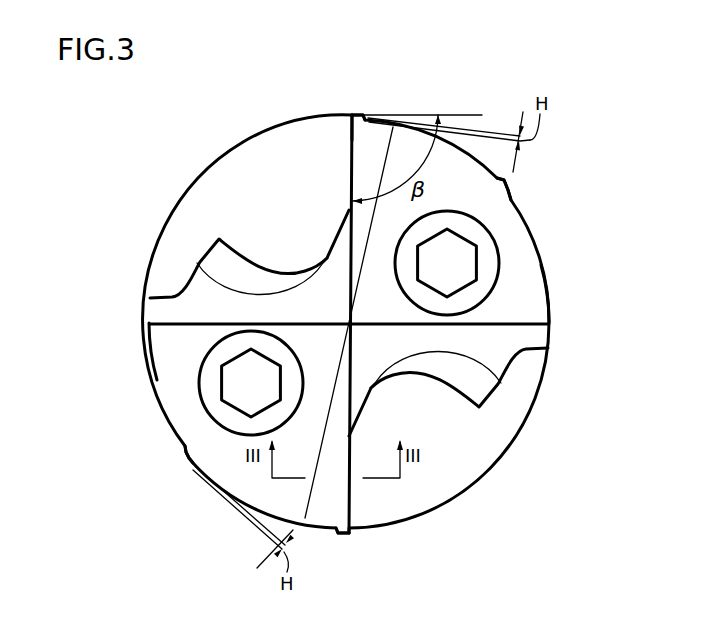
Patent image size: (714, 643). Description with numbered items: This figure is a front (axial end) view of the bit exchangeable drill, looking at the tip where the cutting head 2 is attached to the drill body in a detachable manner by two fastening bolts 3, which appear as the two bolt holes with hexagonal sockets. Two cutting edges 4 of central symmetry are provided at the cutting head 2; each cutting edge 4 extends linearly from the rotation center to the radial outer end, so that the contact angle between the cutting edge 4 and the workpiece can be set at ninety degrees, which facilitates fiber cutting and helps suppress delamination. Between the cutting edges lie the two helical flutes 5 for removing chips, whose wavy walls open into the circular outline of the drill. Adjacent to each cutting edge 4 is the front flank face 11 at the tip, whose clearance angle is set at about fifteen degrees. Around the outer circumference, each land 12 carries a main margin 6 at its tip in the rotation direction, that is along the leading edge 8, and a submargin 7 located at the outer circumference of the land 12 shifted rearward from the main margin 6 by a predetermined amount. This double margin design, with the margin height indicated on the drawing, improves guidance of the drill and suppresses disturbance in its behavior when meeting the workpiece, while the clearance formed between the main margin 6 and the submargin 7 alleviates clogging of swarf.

The cutting head 2 is at (553, 345).
The fastening bolt 3 is at (478, 232).
The cutting edge 4 is at (348, 167).
The helical flute 5 is at (248, 243).
The main margin 6 is at (353, 114).
The submargin 7 is at (505, 183).
The leading edge 8 is at (350, 115).
The front flank face 11 is at (333, 510).
The land 12 is at (549, 280).